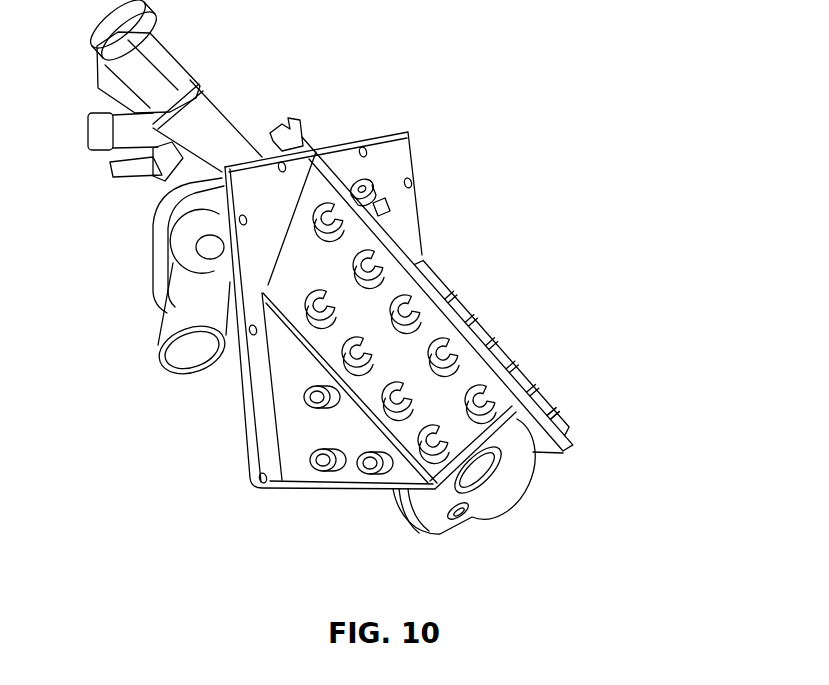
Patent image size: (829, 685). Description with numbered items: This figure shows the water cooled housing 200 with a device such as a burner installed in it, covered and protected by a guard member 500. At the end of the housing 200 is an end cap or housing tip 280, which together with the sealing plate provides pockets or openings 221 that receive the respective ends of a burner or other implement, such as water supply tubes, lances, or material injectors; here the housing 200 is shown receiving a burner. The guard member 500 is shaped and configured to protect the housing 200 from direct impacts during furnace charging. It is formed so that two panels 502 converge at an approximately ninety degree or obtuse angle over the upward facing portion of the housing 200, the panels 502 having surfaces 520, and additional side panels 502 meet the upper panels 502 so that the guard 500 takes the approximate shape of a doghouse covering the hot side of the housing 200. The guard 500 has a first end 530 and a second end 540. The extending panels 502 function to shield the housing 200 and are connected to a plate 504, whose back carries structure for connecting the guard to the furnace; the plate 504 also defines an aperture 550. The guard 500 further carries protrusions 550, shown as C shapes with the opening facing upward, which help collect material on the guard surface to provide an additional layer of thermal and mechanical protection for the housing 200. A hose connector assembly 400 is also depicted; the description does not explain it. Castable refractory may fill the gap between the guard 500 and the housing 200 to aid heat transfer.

The housing 200 is at (480, 510).
The openings 221 is at (483, 473).
The housing tip 280 is at (510, 480).
The hose connector assembly 400 is at (178, 373).
The guard member 500 is at (437, 323).
The panels 502 is at (437, 310).
The plate 504 is at (353, 323).
The surfaces 520 is at (288, 460).
The first end 530 is at (265, 453).
The second end 540 is at (580, 451).
The protrusions 550 is at (518, 404).